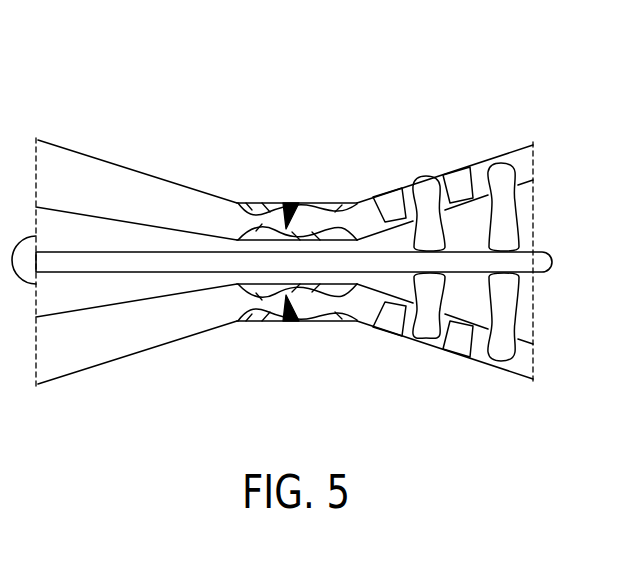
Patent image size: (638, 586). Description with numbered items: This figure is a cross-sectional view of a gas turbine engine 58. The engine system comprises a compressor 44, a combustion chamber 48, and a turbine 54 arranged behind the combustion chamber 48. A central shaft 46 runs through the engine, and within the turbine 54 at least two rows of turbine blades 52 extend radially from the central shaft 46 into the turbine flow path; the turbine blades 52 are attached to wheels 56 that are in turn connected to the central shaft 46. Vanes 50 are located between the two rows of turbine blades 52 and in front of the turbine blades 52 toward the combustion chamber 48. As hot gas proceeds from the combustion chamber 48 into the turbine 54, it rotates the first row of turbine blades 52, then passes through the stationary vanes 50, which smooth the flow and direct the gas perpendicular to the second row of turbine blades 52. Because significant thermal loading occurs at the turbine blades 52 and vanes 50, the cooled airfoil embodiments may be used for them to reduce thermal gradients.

The compressor 44 is at (168, 180).
The central shaft 46 is at (174, 262).
The combustion chamber 48 is at (291, 206).
The vanes 50 is at (387, 188).
The turbine blades 52 is at (420, 188).
The turbine 54 is at (515, 149).
The wheels 56 is at (433, 228).
The gas turbine engine 58 is at (246, 100).